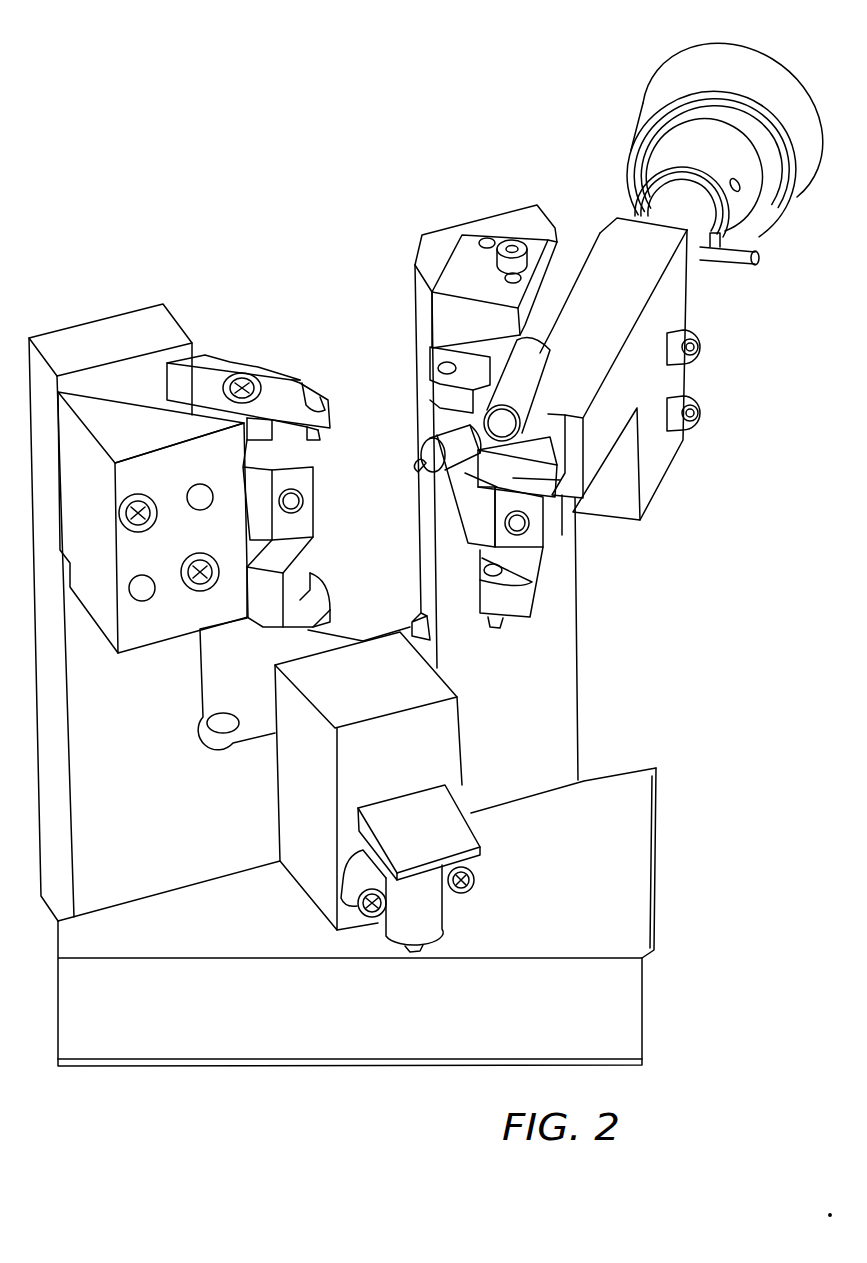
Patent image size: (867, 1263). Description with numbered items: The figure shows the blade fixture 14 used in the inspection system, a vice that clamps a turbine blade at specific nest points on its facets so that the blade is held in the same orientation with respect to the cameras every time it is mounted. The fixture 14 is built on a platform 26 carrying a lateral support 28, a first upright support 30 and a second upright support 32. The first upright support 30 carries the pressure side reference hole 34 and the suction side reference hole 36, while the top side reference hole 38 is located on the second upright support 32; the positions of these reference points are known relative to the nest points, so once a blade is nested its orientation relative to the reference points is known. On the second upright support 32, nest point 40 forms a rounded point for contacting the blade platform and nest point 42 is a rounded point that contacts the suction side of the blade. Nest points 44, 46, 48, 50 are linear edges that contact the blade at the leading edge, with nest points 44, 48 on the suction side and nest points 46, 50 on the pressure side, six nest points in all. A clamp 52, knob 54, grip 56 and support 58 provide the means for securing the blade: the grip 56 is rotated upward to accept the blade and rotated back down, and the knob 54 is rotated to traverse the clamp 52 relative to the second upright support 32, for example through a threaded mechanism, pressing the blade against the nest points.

The fixture 14 is at (191, 148).
The platform 26 is at (622, 881).
The lateral support 28 is at (310, 782).
The first upright support 30 is at (113, 338).
The second upright support 32 is at (523, 222).
The pressure side reference hole 34 is at (330, 472).
The suction side reference hole 36 is at (295, 502).
The top side reference hole 38 is at (447, 368).
The nest point 40 is at (497, 630).
The nest point 42 is at (503, 423).
The nest point 44 is at (315, 380).
The nest point 46 is at (327, 402).
The nest point 48 is at (318, 588).
The nest point 50 is at (330, 594).
The clamp 52 is at (648, 472).
The knob 54 is at (680, 82).
The grip 56 is at (530, 461).
The support 58 is at (441, 822).